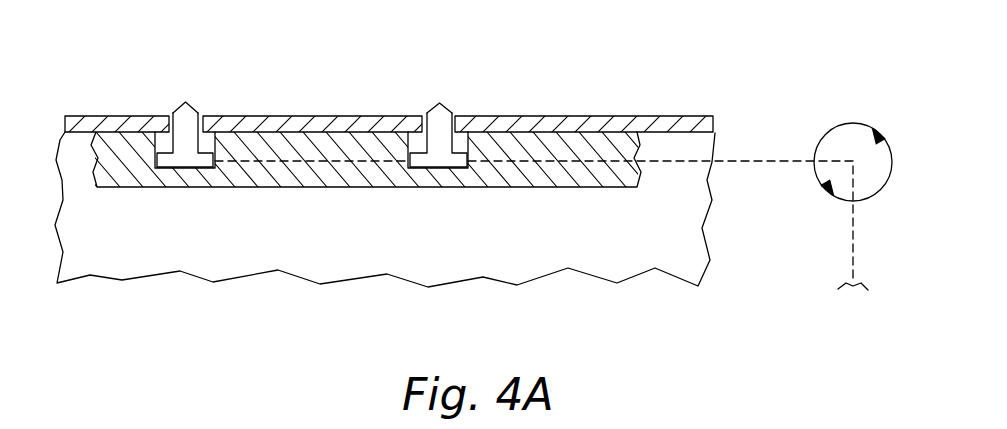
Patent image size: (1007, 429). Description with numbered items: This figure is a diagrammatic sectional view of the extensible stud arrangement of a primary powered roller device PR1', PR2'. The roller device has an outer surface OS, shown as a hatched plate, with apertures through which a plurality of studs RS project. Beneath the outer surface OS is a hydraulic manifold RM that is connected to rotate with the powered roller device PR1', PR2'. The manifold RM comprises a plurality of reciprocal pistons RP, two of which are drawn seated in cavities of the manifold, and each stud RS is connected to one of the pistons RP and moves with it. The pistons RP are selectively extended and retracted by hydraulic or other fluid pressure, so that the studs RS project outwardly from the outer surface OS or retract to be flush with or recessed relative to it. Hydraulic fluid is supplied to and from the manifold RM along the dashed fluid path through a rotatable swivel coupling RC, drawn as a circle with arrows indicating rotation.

The outer surface OS is at (316, 116).
The primary inner powered roller device PR1' is at (388, 74).
The primary outer powered roller device PR2' is at (387, 96).
The hydraulic manifold RM is at (545, 175).
The reciprocal piston RP is at (187, 153).
The stud RS is at (190, 108).
The rotatable coupling RC is at (841, 123).